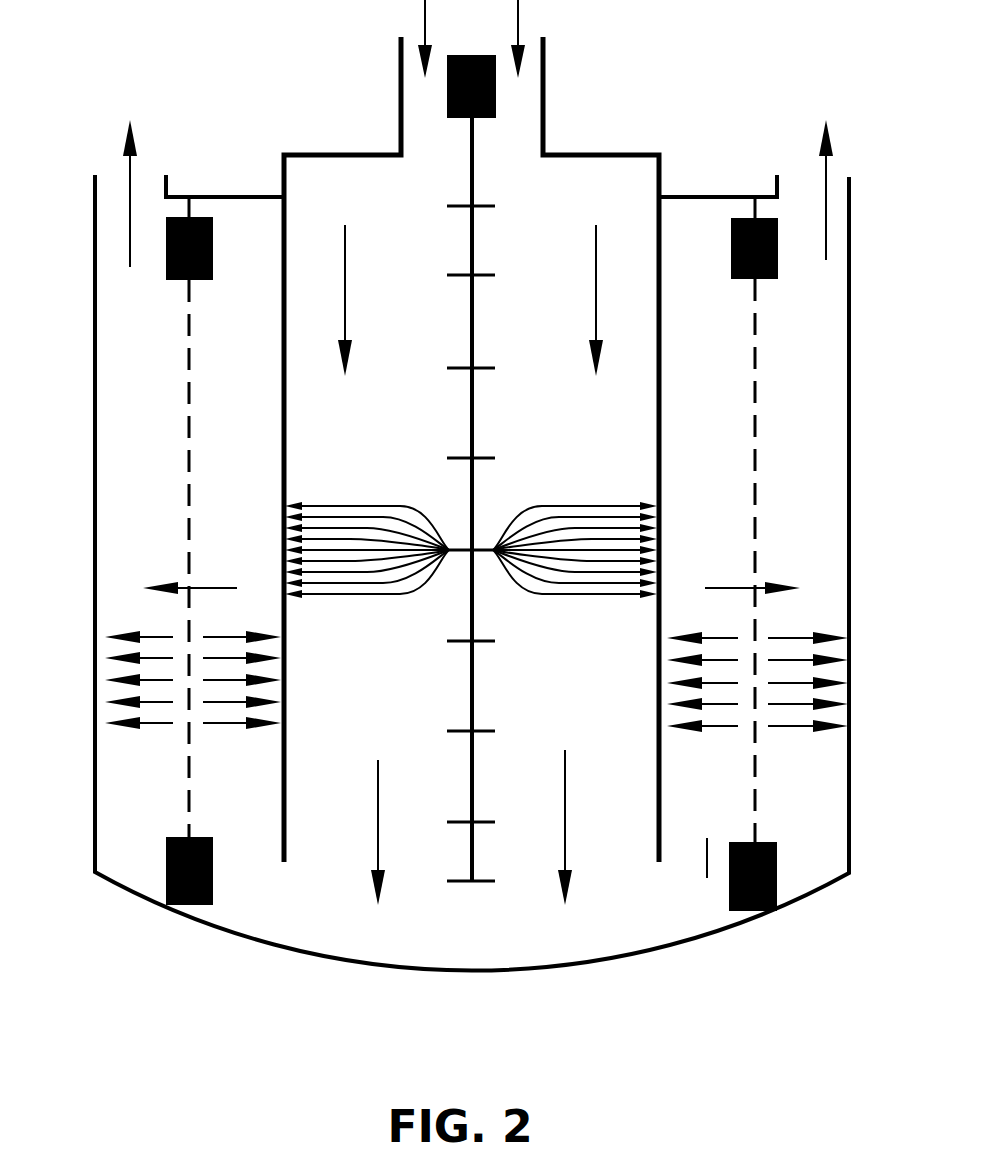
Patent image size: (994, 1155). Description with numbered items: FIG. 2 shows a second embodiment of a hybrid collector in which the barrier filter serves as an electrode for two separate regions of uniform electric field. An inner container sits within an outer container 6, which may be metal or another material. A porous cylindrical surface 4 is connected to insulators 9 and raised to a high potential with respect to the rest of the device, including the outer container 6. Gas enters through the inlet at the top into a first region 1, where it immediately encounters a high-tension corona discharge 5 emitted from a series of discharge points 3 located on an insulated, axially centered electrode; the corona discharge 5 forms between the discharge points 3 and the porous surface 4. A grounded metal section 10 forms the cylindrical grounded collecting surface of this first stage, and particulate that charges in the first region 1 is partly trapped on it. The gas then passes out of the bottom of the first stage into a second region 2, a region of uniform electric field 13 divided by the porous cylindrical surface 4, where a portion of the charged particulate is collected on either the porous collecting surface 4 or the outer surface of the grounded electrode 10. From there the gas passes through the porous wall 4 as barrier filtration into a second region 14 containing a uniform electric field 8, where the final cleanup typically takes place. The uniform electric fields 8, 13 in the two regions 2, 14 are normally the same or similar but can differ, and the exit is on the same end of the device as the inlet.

The first region 1 is at (415, 425).
The second region 2 is at (222, 520).
The discharge points 3 is at (480, 818).
The porous cylindrical surface 4 is at (184, 411).
The corona discharge 5 is at (365, 600).
The outer container 6 is at (867, 837).
The uniform electric field 8 is at (150, 732).
The insulators 9 is at (778, 258).
The grounded metal section 10 is at (652, 807).
The uniform electric field 13 is at (225, 732).
The second region of uniform electric field 14 is at (140, 373).